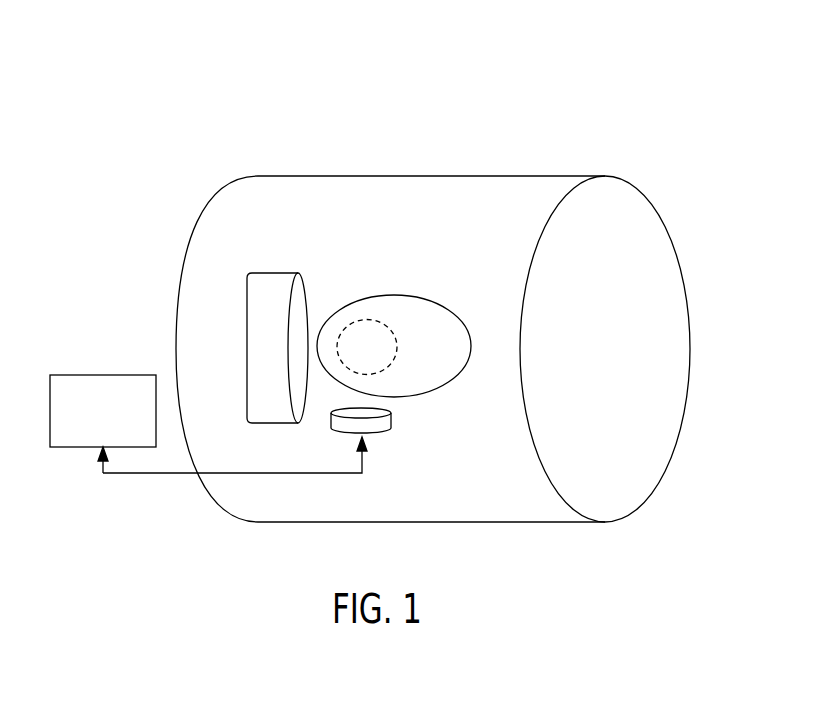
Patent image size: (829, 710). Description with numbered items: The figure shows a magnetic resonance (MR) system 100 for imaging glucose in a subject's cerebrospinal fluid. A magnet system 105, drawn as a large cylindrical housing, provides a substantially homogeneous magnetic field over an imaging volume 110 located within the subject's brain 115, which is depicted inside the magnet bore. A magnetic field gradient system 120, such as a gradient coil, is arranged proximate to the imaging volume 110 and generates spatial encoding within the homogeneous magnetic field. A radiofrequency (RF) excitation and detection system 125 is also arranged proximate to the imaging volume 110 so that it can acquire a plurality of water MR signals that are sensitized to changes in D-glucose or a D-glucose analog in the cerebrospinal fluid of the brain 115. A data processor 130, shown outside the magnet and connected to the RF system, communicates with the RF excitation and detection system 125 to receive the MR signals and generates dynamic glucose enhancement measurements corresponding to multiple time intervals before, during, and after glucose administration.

The magnetic resonance (MR) system 100 is at (620, 92).
The magnet system 105 is at (690, 310).
The imaging volume 110 is at (395, 348).
The subject's brain 115 is at (421, 297).
The magnetic field gradient system 120 is at (309, 297).
The radiofrequency (RF) excitation and detection system 125 is at (393, 420).
The data processor 130 is at (97, 374).